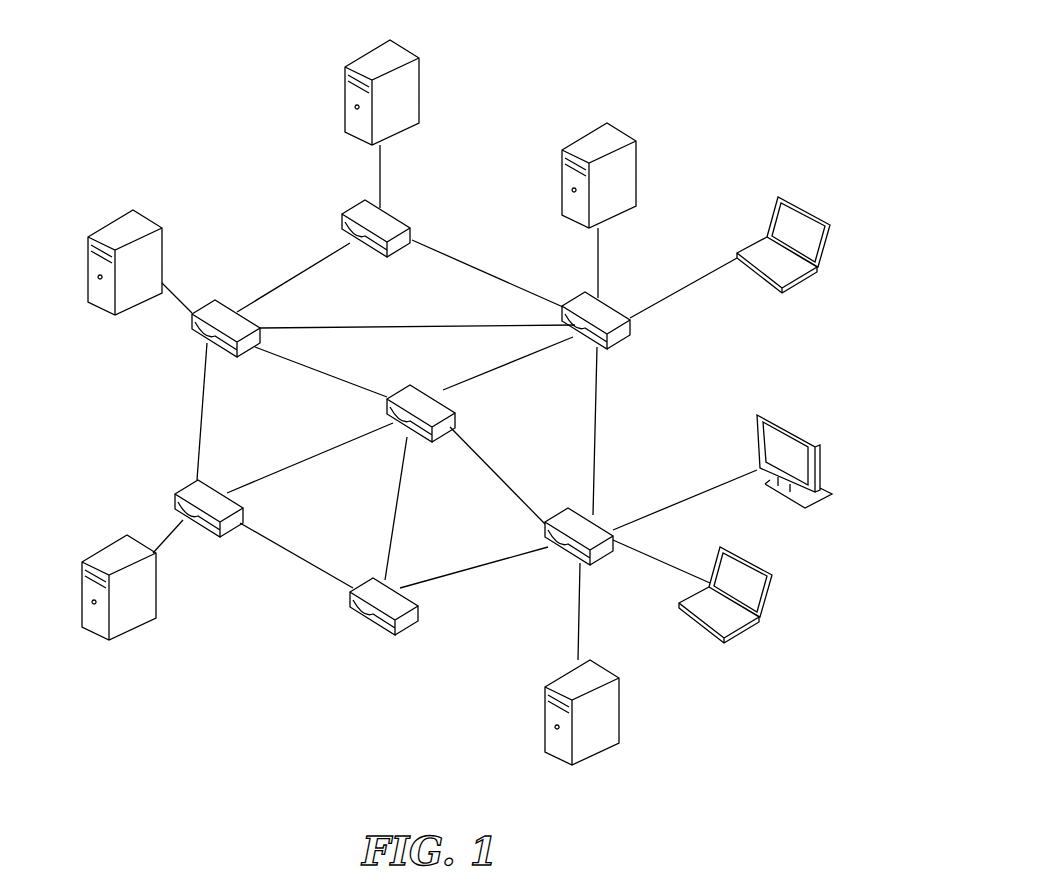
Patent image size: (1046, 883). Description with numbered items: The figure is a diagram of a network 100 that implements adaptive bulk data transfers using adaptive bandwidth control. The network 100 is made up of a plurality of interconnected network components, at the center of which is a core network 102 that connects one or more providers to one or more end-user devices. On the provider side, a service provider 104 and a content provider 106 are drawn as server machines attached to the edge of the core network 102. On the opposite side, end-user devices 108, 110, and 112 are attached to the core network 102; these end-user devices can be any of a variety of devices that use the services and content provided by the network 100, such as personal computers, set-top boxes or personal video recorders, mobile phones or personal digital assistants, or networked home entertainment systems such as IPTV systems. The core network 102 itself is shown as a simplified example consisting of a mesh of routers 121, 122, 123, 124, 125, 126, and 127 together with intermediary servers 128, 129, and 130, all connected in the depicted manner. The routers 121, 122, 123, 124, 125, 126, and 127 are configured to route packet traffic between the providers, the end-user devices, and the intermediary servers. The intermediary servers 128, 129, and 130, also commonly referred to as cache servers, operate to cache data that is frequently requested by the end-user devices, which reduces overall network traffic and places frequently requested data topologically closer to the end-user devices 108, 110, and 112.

The network 100 is at (173, 733).
The core network 102 is at (284, 222).
The service provider 104 is at (115, 220).
The content provider 106 is at (100, 548).
The end-user device 108 is at (812, 215).
The end-user device 110 is at (805, 437).
The end-user device 112 is at (765, 570).
The router 121 is at (190, 488).
The router 122 is at (197, 333).
The router 123 is at (388, 208).
The router 124 is at (409, 383).
The router 125 is at (370, 623).
The router 126 is at (610, 297).
The router 127 is at (598, 512).
The intermediary server 128 is at (420, 78).
The intermediary server 129 is at (636, 172).
The intermediary server 130 is at (618, 710).